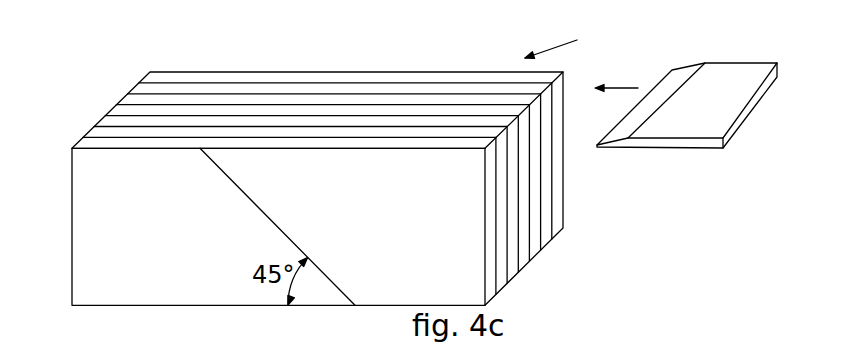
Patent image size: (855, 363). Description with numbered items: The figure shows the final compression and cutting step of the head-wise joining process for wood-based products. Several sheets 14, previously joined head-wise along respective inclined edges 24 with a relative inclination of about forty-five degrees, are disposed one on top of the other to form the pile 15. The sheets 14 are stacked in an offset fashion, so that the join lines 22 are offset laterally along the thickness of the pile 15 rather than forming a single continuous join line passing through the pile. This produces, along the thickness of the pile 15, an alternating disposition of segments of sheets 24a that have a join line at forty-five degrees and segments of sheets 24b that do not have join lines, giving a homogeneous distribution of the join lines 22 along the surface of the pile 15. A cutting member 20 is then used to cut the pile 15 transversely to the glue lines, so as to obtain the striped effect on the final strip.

The sheets 14 is at (172, 70).
The join line 22 is at (196, 104).
The segments of sheets with join line 24a is at (135, 100).
The segments of sheets without join lines 24b is at (238, 88).
The edges 24 is at (283, 230).
The pile 15 is at (571, 40).
The cutting member 20 is at (746, 85).